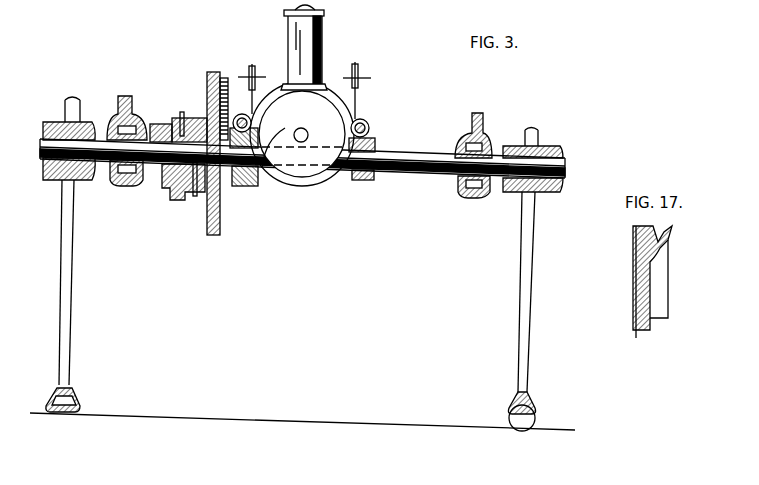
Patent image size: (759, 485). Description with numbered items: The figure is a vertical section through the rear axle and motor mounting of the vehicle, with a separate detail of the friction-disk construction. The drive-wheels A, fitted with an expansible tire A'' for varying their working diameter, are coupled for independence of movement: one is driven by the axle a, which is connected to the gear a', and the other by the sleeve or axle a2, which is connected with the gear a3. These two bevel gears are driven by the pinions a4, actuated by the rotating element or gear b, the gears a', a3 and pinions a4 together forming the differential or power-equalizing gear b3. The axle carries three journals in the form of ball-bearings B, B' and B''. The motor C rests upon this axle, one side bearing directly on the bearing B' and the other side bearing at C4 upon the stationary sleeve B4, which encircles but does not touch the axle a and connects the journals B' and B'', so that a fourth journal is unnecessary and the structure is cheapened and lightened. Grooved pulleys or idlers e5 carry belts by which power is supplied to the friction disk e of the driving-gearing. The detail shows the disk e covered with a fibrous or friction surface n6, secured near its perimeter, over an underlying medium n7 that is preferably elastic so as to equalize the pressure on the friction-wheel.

In FIG. 3, the axle a is at (307, 157).
In FIG. 3, the drive-wheels A is at (304, 244).
In FIG. 3, the expansible tire A'' is at (301, 409).
In FIG. 3, the ball-bearing journal B is at (127, 146).
In FIG. 3, the ball-bearing journal B' is at (473, 165).
In FIG. 3, the ball-bearing journal B'' is at (268, 166).
In FIG. 3, the stationary sleeve B4 is at (383, 181).
In FIG. 3, the gear a' is at (243, 164).
In FIG. 3, the sleeve or axle a2 is at (158, 124).
In FIG. 3, the gear a3 is at (180, 112).
In FIG. 3, the pinions a4 is at (172, 196).
In FIG. 3, the rotating element or gear b is at (206, 96).
In FIG. 3, the differential gear b3 is at (193, 166).
In FIG. 3, the motor C is at (302, 95).
In FIG. 3, the motor support point C4 is at (375, 143).
In FIG. 3, the grooved pulleys or idlers e5 is at (300, 95).
In FIG. 17, the disk e is at (652, 278).
In FIG. 17, the fibrous or friction surface n6 is at (636, 241).
In FIG. 17, the underlying elastic medium n7 is at (640, 343).